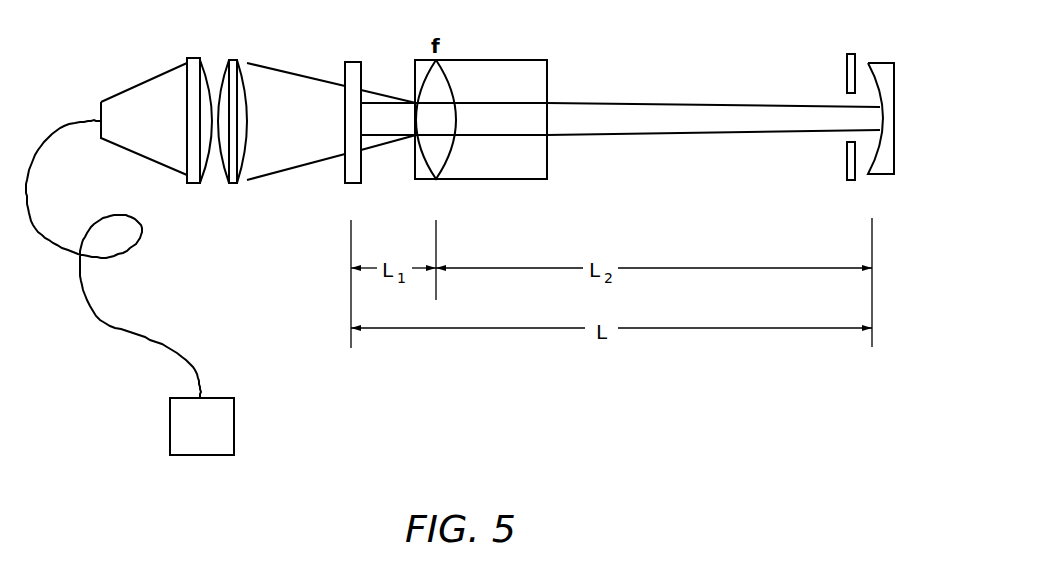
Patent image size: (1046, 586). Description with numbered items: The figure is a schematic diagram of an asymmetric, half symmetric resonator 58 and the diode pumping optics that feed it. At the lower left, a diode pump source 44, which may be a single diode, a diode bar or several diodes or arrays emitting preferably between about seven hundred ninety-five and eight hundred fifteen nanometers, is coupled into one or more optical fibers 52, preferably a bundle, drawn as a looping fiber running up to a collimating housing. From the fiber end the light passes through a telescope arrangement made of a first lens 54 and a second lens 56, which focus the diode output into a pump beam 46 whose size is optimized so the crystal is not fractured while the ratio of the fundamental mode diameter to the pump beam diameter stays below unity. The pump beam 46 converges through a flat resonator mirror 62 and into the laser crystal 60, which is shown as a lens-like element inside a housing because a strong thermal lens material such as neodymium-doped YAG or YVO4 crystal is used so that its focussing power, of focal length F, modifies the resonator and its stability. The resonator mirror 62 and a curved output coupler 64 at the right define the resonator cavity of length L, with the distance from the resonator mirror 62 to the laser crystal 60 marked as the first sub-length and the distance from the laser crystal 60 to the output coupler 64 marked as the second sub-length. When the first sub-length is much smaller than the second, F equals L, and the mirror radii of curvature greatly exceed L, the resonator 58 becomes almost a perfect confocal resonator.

The diode pump source 44 is at (235, 425).
The optical fibers 52 is at (148, 333).
The first lens 54 is at (197, 58).
The second lens 56 is at (233, 60).
The pump beam 46 is at (290, 74).
The resonator mirror 62 is at (362, 63).
The laser crystal 60 is at (482, 180).
The half symmetric resonator 58 is at (628, 68).
The output coupler 64 is at (872, 172).